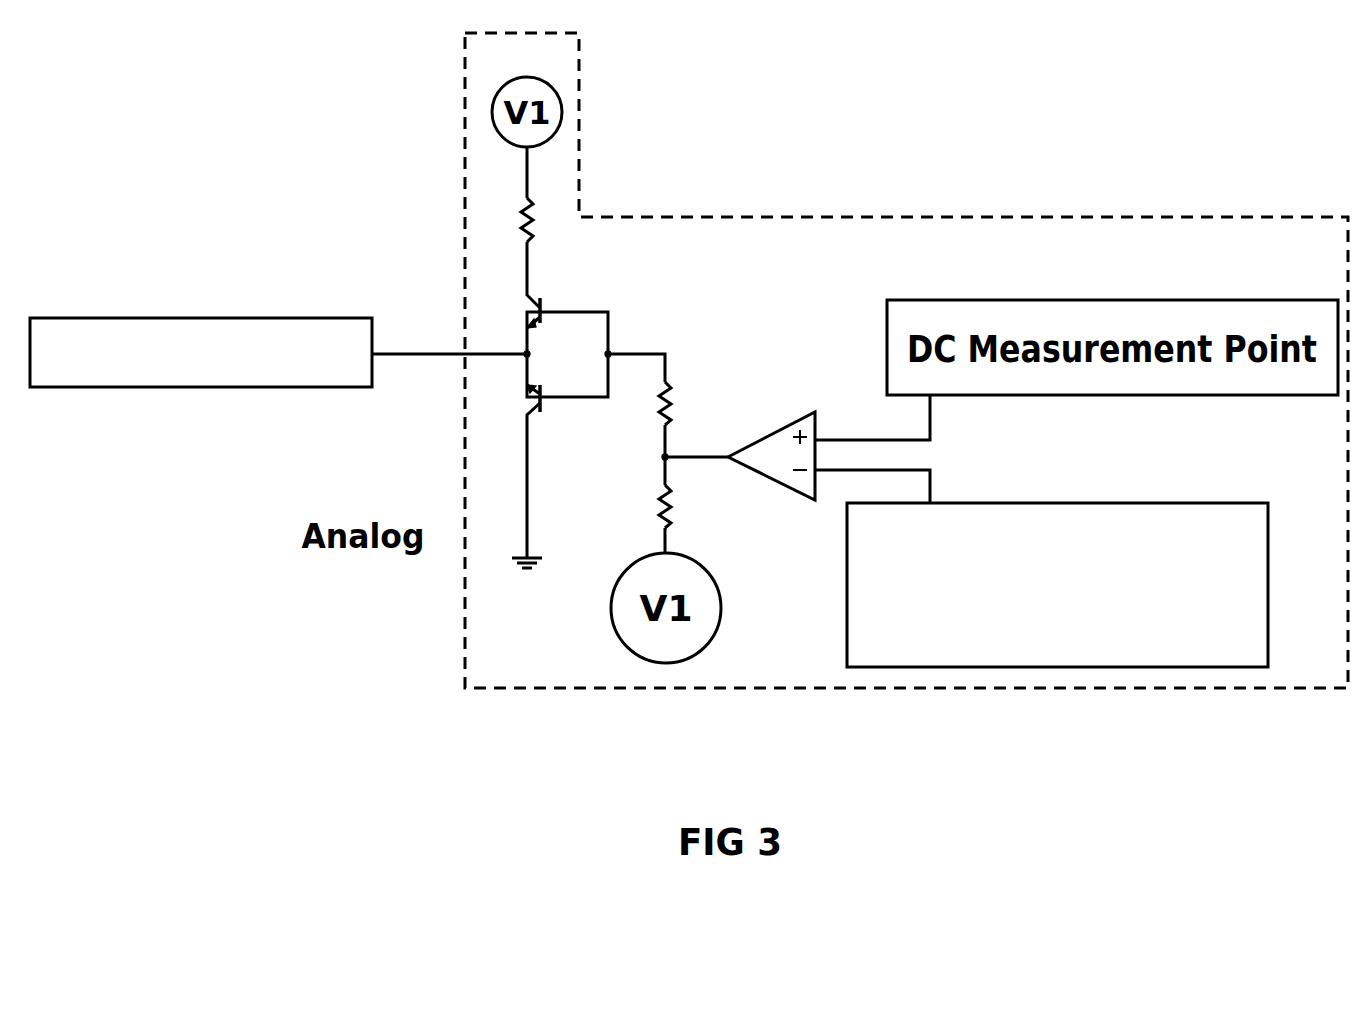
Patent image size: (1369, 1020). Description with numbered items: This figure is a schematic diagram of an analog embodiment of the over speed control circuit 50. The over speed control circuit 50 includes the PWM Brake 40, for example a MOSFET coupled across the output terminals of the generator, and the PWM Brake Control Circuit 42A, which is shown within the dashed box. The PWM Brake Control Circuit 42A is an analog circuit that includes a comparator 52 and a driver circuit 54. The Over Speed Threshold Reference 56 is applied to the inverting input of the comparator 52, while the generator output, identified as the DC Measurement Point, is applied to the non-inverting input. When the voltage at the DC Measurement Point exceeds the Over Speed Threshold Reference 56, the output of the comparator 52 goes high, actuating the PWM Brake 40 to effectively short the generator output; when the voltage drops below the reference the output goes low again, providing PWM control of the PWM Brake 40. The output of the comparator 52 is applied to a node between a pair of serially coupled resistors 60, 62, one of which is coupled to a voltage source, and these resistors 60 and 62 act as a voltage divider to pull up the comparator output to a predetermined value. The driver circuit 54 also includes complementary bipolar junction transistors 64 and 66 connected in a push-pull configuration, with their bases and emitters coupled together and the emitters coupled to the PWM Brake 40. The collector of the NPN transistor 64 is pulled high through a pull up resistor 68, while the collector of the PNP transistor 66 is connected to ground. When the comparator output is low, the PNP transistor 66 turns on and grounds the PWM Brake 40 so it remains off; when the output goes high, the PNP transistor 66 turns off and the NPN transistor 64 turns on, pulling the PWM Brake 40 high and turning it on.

The PWM Brake 40 is at (232, 318).
The PWM Brake Control Circuit 42A is at (790, 212).
The over speed control circuit 50 is at (1115, 197).
The comparator 52 is at (780, 425).
The driver circuit 54 is at (667, 345).
The Over Speed Threshold Reference 56 is at (1042, 500).
The resistor 60 is at (678, 512).
The resistor 62 is at (675, 405).
The NPN transistor 64 is at (543, 300).
The PNP transistor 66 is at (556, 476).
The pull up resistor 68 is at (533, 218).